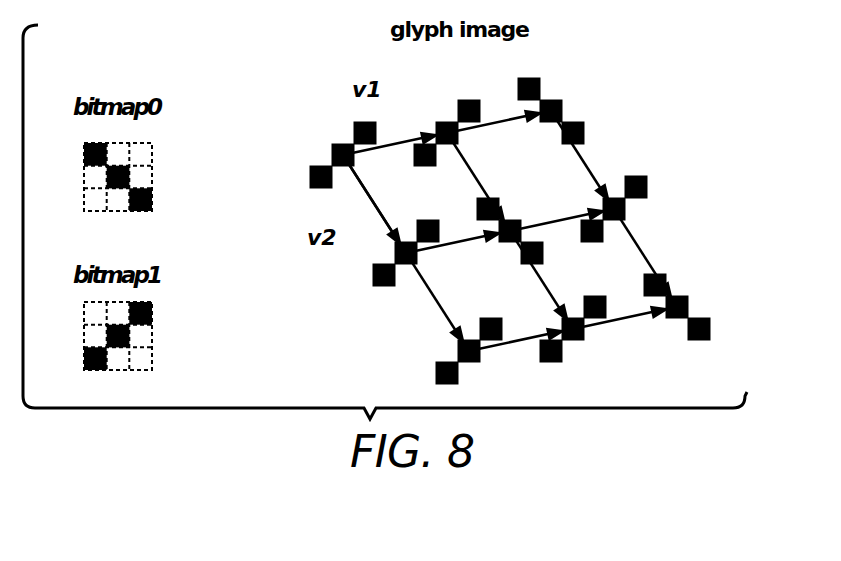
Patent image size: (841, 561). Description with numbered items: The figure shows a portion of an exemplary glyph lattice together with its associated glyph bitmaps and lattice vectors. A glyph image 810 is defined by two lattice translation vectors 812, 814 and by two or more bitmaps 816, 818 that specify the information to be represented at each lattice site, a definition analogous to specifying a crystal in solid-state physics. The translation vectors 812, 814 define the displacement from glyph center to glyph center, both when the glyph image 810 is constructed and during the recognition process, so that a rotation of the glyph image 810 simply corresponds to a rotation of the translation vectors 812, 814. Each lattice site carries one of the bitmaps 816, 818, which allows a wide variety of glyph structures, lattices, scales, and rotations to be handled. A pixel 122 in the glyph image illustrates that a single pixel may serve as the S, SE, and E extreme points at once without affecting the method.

The glyph image 810 is at (521, 221).
The lattice translation vector 812 is at (397, 138).
The lattice translation vector 814 is at (380, 213).
The bitmap 816 is at (152, 175).
The bitmap 818 is at (152, 336).
The pixel 122 is at (596, 352).